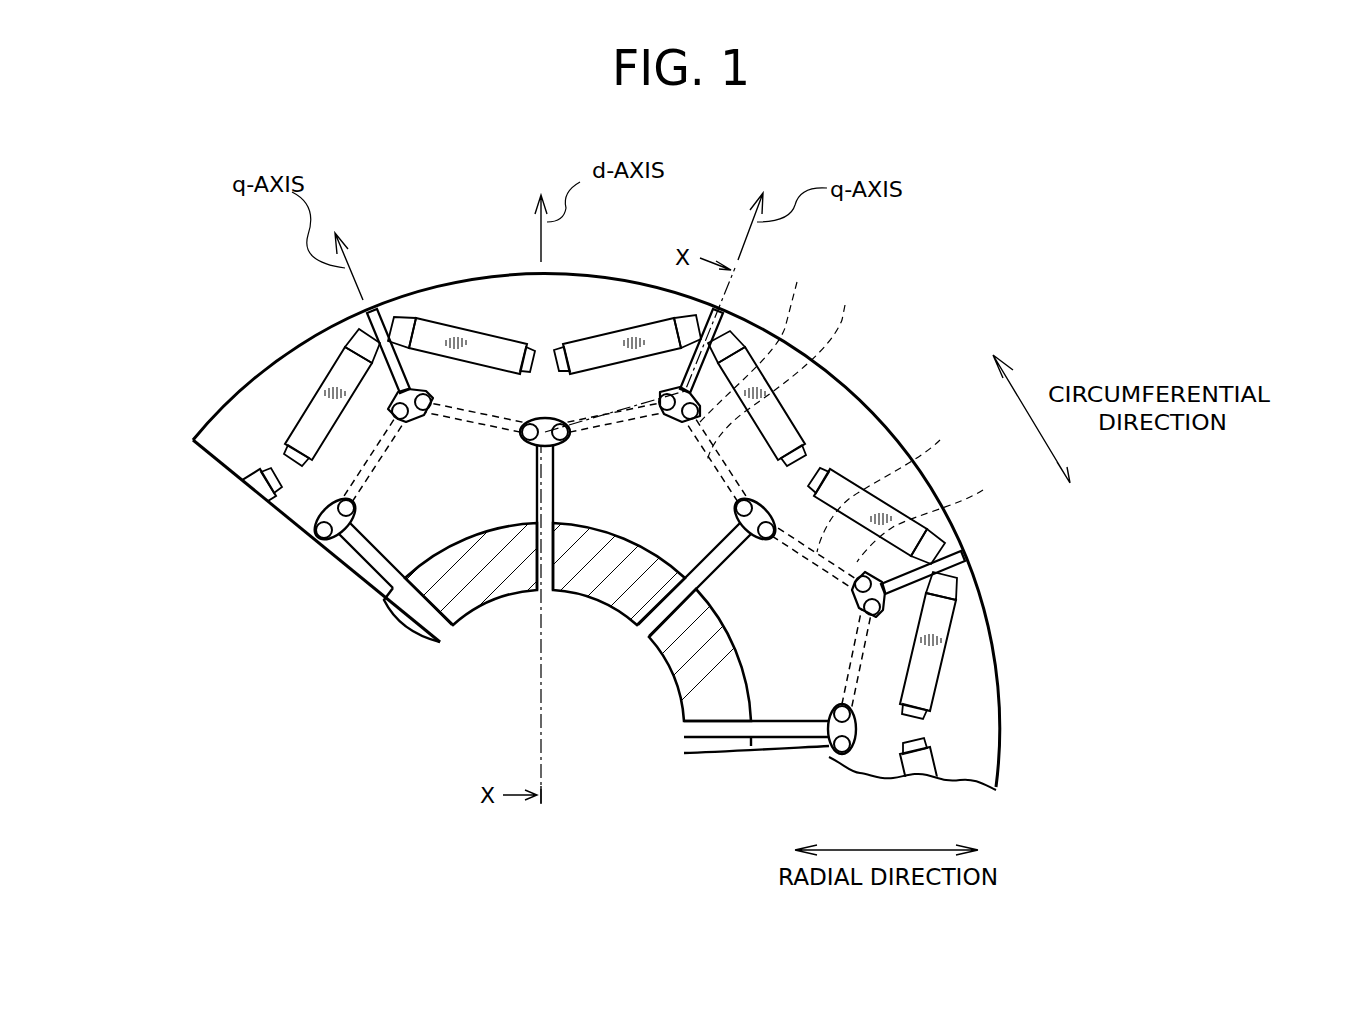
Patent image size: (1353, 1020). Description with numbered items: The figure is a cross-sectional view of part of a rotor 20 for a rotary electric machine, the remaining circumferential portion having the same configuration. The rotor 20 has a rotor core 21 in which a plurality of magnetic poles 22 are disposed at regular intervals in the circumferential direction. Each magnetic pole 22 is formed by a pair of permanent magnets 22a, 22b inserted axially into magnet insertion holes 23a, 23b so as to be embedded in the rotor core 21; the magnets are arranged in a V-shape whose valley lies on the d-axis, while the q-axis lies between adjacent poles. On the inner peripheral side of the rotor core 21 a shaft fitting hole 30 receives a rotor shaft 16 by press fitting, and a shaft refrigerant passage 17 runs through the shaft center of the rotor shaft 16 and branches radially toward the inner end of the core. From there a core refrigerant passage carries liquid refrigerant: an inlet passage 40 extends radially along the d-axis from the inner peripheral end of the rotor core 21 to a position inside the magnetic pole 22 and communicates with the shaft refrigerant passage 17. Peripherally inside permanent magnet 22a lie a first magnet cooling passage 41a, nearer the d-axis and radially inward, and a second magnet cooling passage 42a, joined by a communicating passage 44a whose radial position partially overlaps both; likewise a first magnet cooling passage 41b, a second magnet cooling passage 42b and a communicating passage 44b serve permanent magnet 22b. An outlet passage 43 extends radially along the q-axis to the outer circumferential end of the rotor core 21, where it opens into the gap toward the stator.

The rotor shaft 16 is at (697, 697).
The shaft refrigerant passage 17 is at (588, 690).
The rotor 20 is at (1023, 727).
The rotor core 21 is at (258, 403).
The magnetic pole 22 is at (544, 276).
The permanent magnet 22a is at (468, 335).
The permanent magnet 22b is at (585, 345).
The magnet insertion hole 23a is at (400, 330).
The magnet insertion hole 23b is at (680, 330).
The shaft fitting hole 30 is at (462, 545).
The inlet passage 40 is at (723, 550).
The first magnet cooling passage 41a is at (743, 490).
The first magnet cooling passage 41b is at (783, 548).
The second magnet cooling passage 42a is at (761, 334).
The second magnet cooling passage 42b is at (942, 511).
The outlet passage 43 is at (367, 370).
The communicating passage 44a is at (790, 368).
The communicating passage 44b is at (893, 481).